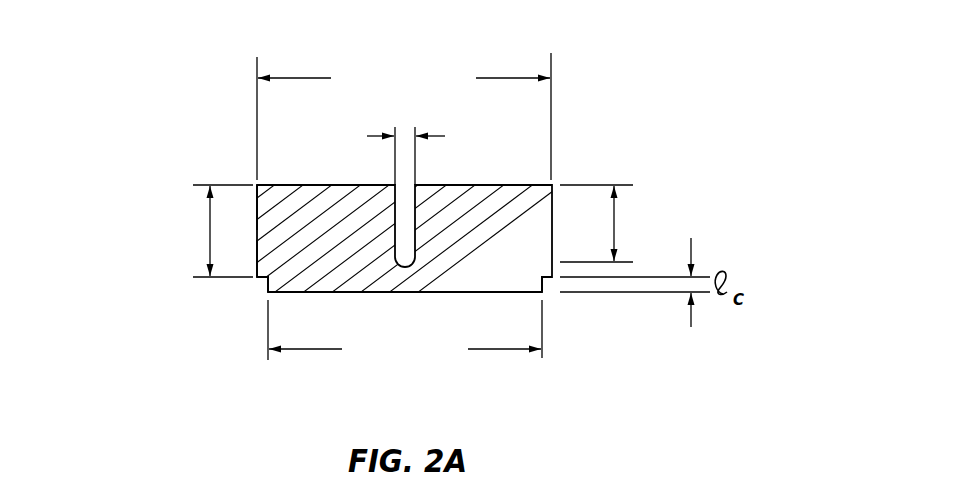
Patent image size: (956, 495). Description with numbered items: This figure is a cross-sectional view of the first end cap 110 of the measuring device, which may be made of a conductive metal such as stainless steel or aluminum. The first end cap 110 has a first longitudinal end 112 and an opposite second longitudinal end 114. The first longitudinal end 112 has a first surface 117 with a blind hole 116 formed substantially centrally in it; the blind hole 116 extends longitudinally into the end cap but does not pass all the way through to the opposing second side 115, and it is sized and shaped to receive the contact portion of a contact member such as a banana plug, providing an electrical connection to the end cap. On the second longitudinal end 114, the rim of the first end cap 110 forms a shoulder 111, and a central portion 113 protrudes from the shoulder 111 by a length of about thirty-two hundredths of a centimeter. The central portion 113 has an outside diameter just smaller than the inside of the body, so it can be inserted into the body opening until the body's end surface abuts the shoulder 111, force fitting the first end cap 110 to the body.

The first end cap 110 is at (735, 192).
The shoulder 111 is at (555, 293).
The first longitudinal end 112 is at (165, 194).
The central portion 113 is at (263, 285).
The second longitudinal end 114 is at (157, 283).
The second side 115 is at (500, 293).
The blind hole 116 is at (408, 137).
The first surface 117 is at (325, 184).